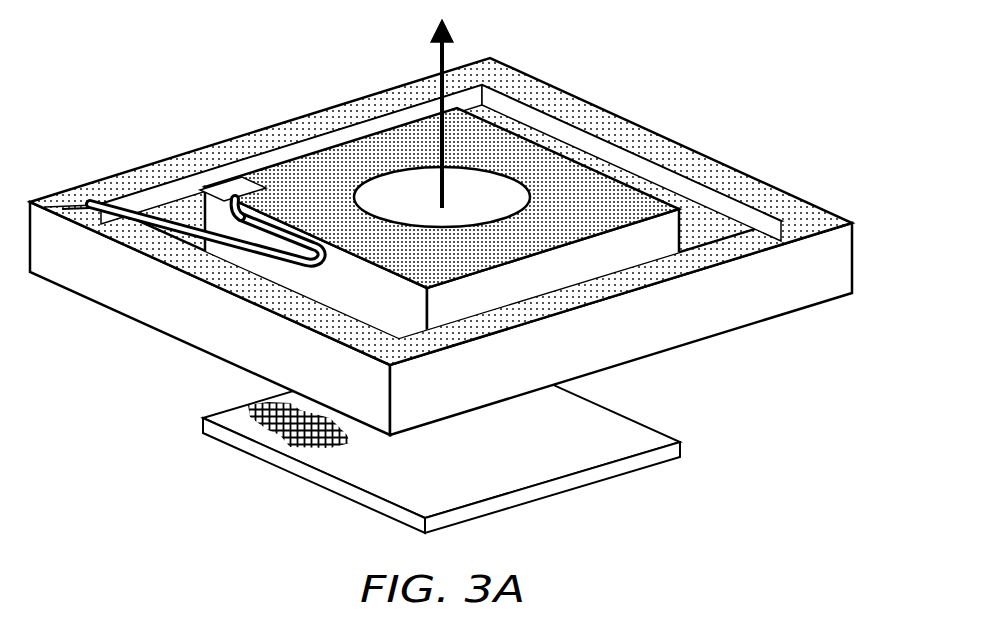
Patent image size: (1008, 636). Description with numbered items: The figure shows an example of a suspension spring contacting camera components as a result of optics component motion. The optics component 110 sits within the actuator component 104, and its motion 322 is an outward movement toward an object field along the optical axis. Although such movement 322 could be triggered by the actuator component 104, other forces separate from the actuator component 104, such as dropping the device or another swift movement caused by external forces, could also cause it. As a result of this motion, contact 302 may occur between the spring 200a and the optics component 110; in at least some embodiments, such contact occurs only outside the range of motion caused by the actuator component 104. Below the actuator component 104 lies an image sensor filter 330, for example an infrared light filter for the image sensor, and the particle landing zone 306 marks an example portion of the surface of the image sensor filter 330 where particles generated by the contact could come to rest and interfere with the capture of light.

The spring 200a is at (100, 178).
The contact 302 is at (303, 208).
The motion 322 is at (440, 40).
The optics component 110 is at (645, 215).
The actuator component 104 is at (816, 215).
The particle landing zone 306 is at (283, 453).
The image sensor filter 330 is at (614, 440).